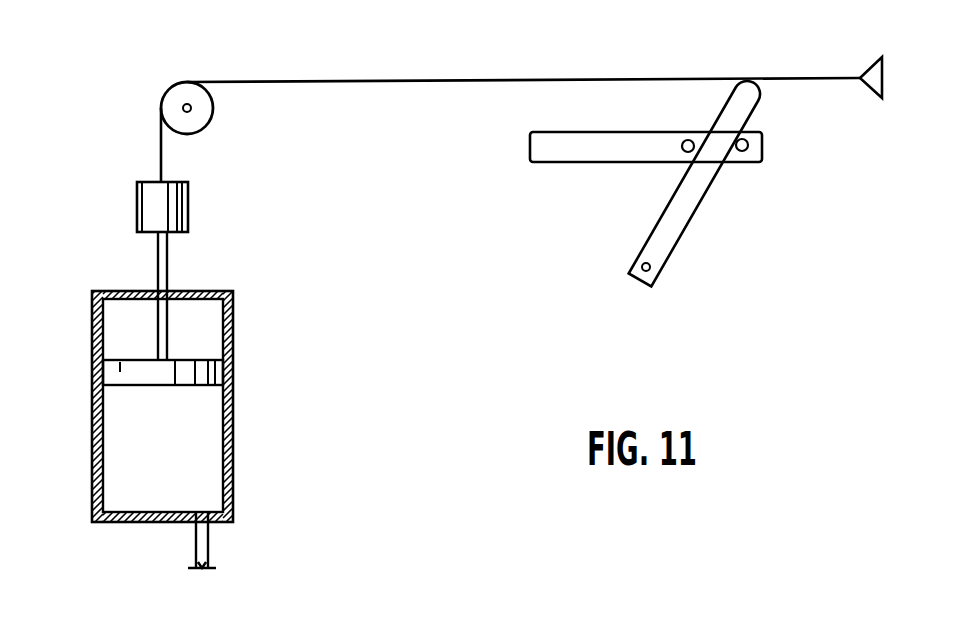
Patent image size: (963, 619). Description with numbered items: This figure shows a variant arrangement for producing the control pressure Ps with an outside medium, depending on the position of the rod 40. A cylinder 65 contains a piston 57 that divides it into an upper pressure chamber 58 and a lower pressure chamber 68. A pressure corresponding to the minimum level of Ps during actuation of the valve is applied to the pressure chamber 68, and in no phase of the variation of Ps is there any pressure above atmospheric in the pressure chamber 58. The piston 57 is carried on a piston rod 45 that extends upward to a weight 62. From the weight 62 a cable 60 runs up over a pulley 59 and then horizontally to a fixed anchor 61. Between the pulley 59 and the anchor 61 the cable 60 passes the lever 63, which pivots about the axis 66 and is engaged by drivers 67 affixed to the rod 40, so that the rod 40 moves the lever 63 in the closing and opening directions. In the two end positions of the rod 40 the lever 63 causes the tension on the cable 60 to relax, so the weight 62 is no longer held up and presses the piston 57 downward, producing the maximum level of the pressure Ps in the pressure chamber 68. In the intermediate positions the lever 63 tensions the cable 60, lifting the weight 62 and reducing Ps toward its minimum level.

The rod 40 is at (540, 145).
The rod 45 is at (163, 262).
The piston 57 is at (103, 367).
The pressure chamber 58 is at (203, 328).
The pulley 59 is at (181, 92).
The cable 60 is at (388, 80).
The anchor 61 is at (868, 72).
The weight 62 is at (178, 207).
The lever 63 is at (692, 194).
The cylinder 65 is at (155, 522).
The axis 66 is at (655, 275).
The pins 67 is at (685, 148).
The pressure chamber 68 is at (200, 465).